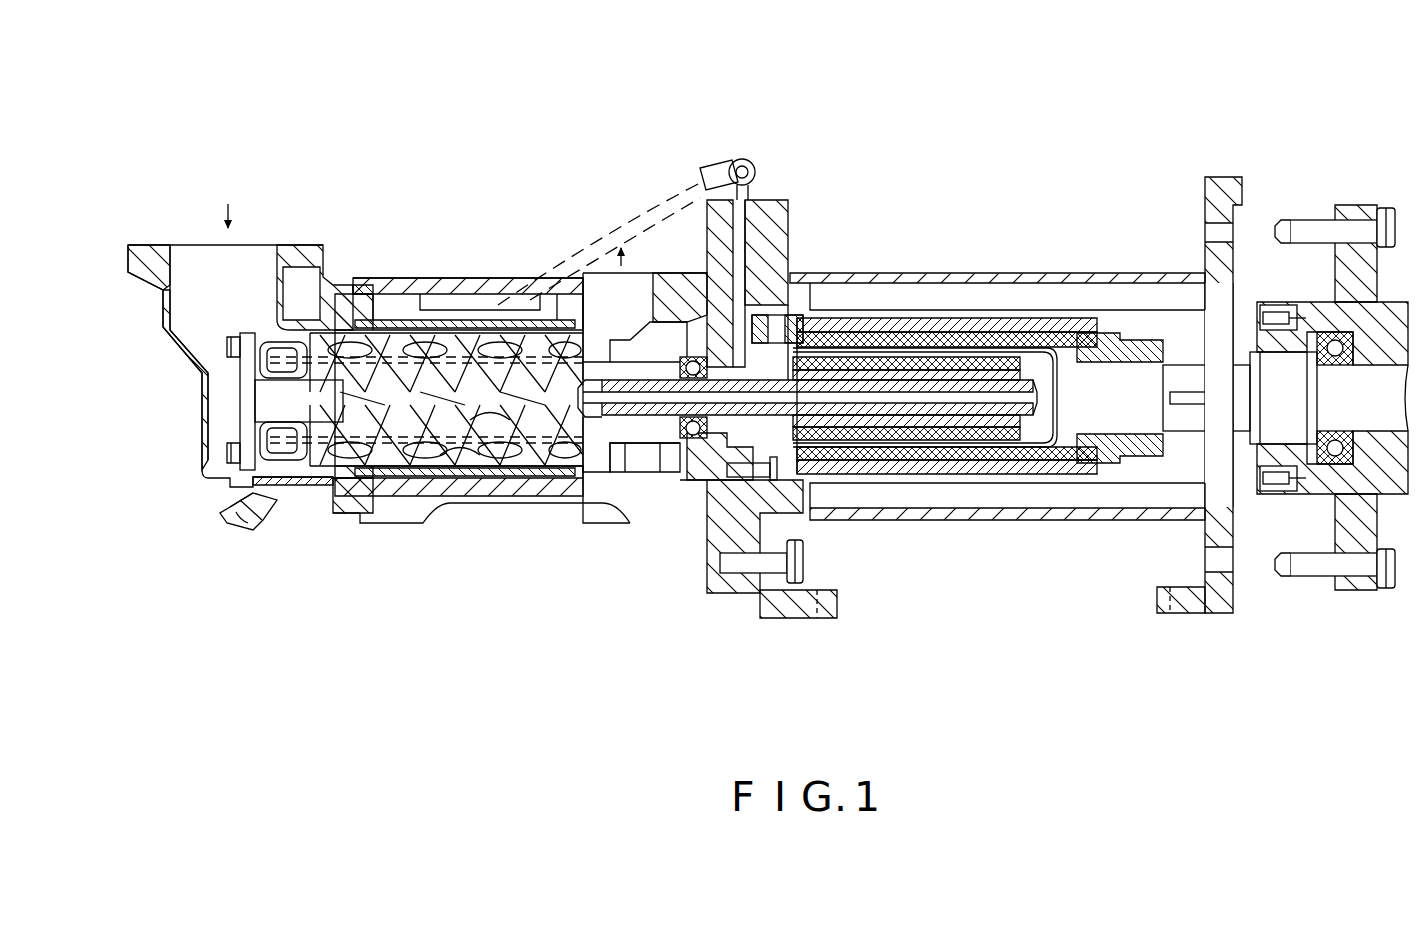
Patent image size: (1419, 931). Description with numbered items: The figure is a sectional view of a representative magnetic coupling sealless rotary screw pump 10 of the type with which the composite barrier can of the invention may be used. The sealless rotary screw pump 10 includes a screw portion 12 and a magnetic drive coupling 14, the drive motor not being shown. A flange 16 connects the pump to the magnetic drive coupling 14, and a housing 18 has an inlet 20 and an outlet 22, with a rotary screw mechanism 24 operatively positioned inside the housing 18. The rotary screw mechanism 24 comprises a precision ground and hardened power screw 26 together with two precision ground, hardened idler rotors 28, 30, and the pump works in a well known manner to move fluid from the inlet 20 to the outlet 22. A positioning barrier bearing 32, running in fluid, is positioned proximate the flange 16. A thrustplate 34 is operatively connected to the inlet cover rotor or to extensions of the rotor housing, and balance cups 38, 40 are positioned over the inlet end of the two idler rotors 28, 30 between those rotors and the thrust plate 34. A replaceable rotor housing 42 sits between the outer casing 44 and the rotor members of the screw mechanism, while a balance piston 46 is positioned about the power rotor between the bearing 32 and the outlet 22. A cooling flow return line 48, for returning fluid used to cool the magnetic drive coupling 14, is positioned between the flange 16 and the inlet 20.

The sealless rotary screw pump 10 is at (738, 128).
The screw portion 12 is at (468, 250).
The magnetic drive coupling 14 is at (953, 252).
The flange 16 is at (753, 210).
The housing 18 is at (307, 253).
The inlet 20 is at (243, 267).
The outlet 22 is at (640, 290).
The rotary screw mechanism 24 is at (507, 398).
The power screw 26 is at (553, 405).
The idler rotor 28 is at (310, 443).
The idler rotor 30 is at (322, 345).
The positioning barrier bearing 32 is at (684, 440).
The thrustplate 34 is at (247, 398).
The balance cup 38 is at (277, 342).
The balance cup 40 is at (227, 467).
The replaceable rotor housing 42 is at (497, 440).
The outer casing 44 is at (347, 473).
The balance piston 46 is at (635, 428).
The cooling flow return line 48 is at (745, 158).